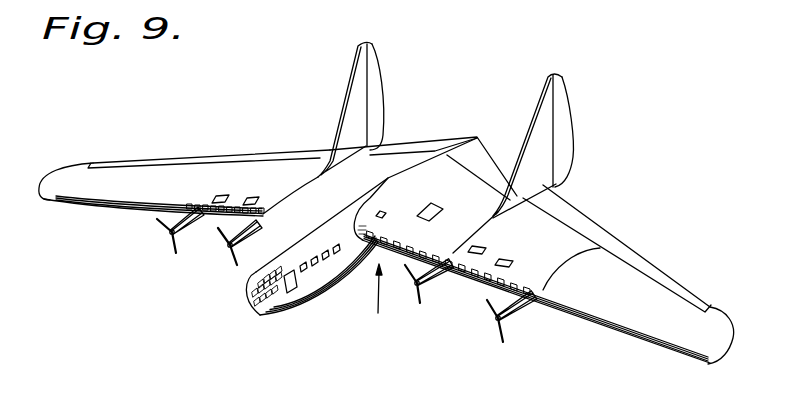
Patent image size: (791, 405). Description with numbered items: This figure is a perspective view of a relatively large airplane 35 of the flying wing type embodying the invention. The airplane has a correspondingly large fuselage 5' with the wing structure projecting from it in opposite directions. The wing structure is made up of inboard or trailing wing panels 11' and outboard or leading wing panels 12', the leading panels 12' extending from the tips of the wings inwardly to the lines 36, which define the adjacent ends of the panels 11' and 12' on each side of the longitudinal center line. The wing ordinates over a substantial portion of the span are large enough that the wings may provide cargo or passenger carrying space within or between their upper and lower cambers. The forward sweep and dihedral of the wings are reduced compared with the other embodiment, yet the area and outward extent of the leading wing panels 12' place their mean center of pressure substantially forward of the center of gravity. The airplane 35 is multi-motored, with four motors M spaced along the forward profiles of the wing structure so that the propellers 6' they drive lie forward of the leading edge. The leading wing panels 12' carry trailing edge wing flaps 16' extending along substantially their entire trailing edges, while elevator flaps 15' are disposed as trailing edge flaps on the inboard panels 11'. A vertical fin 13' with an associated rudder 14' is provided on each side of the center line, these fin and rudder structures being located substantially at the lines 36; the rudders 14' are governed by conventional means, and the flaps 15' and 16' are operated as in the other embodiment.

The fuselage 5' is at (317, 259).
The propellers 6' is at (321, 292).
The inboard or trailing wing panels 11' is at (423, 146).
The outboard or leading wing panels 12' is at (386, 234).
The vertical fin 13' is at (431, 130).
The rudder 14' is at (485, 112).
The elevator flaps 15' is at (446, 153).
The trailing edge wing flaps 16' is at (399, 215).
The airplane 35 is at (379, 297).
The lines 36 is at (291, 182).
The motors M is at (240, 227).